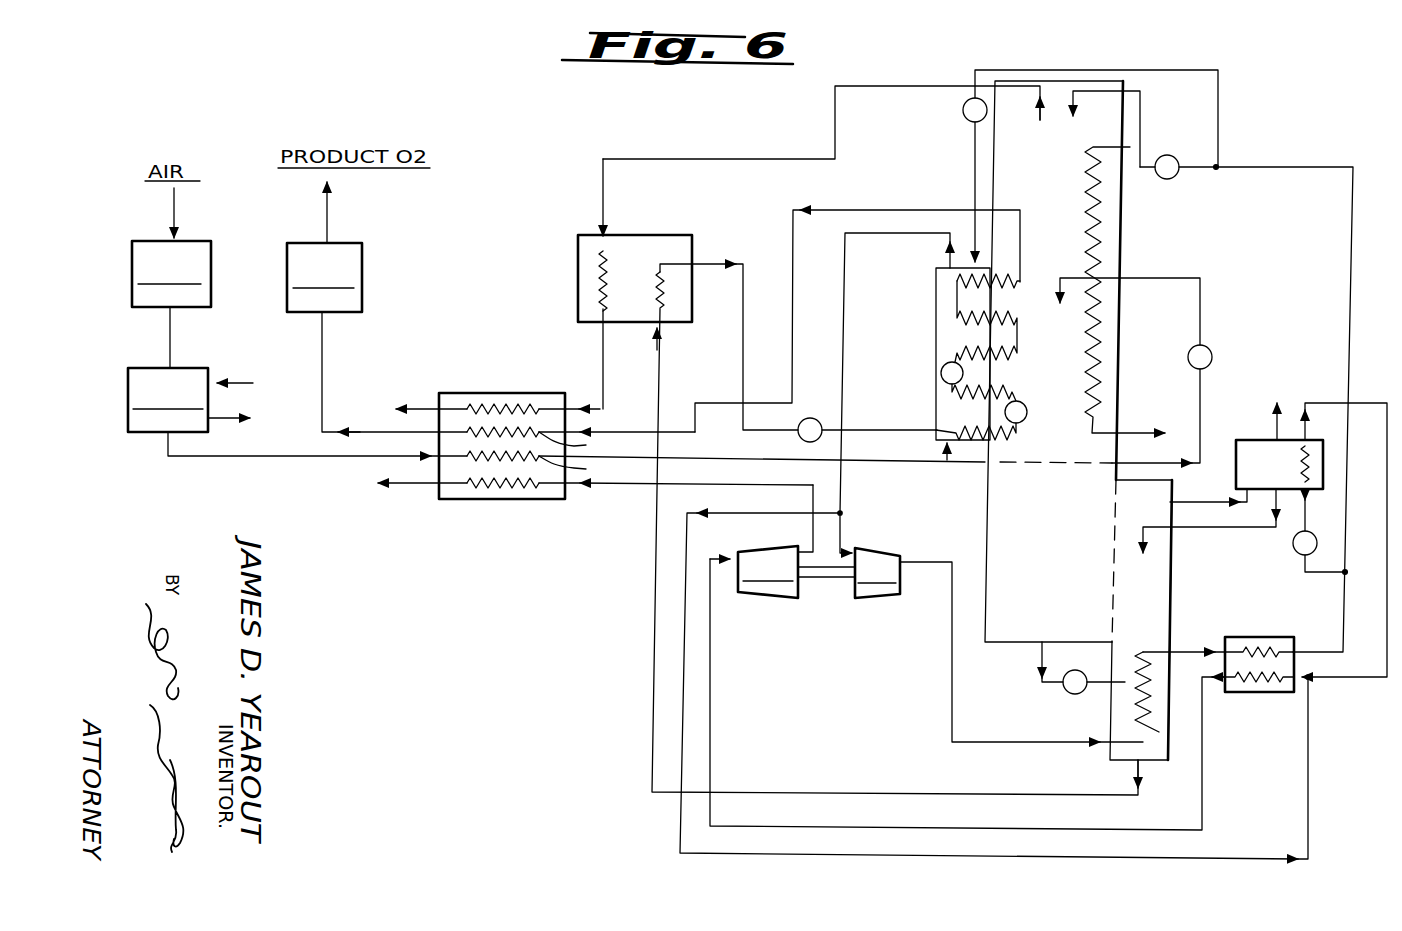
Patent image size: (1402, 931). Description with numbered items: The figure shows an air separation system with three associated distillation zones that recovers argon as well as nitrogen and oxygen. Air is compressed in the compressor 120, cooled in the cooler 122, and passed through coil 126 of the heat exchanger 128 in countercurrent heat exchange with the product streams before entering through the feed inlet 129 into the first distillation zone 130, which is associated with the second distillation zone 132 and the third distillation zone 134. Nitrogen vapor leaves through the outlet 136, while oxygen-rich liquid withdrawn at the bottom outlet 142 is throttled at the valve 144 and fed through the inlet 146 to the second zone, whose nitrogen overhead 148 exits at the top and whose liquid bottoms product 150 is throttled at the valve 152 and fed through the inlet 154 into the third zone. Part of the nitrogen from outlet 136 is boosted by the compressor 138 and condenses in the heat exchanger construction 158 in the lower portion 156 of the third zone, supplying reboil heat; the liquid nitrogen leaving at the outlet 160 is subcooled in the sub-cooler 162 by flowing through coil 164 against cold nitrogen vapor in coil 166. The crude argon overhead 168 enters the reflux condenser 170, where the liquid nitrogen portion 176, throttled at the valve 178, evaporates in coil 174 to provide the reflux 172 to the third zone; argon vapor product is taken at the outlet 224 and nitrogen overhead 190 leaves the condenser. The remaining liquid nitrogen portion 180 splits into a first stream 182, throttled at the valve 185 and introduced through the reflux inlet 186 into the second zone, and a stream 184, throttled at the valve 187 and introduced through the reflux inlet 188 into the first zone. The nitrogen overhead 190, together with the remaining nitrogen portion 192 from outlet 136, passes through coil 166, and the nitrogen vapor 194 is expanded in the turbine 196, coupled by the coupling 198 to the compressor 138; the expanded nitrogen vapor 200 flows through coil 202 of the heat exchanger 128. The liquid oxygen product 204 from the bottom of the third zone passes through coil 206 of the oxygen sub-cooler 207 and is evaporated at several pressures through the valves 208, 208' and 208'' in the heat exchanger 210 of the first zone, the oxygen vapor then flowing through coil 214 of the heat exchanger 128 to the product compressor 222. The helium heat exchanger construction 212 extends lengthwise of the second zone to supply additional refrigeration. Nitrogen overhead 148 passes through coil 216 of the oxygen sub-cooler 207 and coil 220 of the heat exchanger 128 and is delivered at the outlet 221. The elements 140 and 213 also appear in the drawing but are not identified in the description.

The compressor 120 is at (222, 230).
The cooler 122 is at (204, 370).
The coil 126 is at (586, 470).
The heat exchanger 128 is at (500, 404).
The air feed inlet 129 is at (962, 470).
The first distillation zone 130 is at (973, 400).
The second distillation zone 132 is at (985, 550).
The third distillation zone 134 is at (1183, 620).
The nitrogen vapor outlet 136 is at (904, 235).
The compressor 138 is at (880, 598).
The line 140 is at (1010, 742).
The oxygen-rich liquid outlet 142 is at (944, 462).
The throttle valve 144 is at (1212, 352).
The feed inlet 146 is at (1085, 361).
The nitrogen overhead 148 is at (810, 162).
The liquid bottoms product 150 is at (1036, 668).
The throttle valve 152 is at (1064, 694).
The feed inlet 154 is at (1120, 680).
The lower portion 156 is at (1168, 745).
The heat exchanger construction 158 is at (1150, 710).
The liquid nitrogen outlet 160 is at (1254, 641).
The sub-cooler 162 is at (1224, 646).
The coil 164 is at (1256, 646).
The coil 166 is at (1278, 668).
The crude argon overhead 168 is at (1206, 508).
The reflux condenser 170 is at (1256, 440).
The reflux line 172 is at (1218, 528).
The coil 174 is at (1278, 427).
The liquid nitrogen portion 176 is at (1333, 576).
The throttle valve 178 is at (1293, 555).
The remaining liquid nitrogen portion 180 is at (1350, 352).
The first stream 182 is at (1198, 165).
The second stream 184 is at (1074, 55).
The throttle valve 185 is at (1168, 155).
The reflux inlet 186 is at (1100, 91).
The throttle valve 187 is at (963, 109).
The reflux inlet 188 is at (973, 196).
The nitrogen overhead 190 is at (1384, 400).
The remaining nitrogen overhead portion 192 is at (1001, 857).
The nitrogen vapor 194 is at (1133, 830).
The turbine 196 is at (776, 598).
The coupling 198 is at (836, 580).
The expanded nitrogen vapor 200 is at (628, 486).
The coil 202 is at (536, 449).
The liquid oxygen product outlet 204 is at (1128, 780).
The coil 206 is at (663, 320).
The oxygen sub-cooler 207 is at (623, 282).
The throttle valve 208 is at (867, 415).
The throttle valve 208' is at (1053, 441).
The throttle valve 208'' is at (914, 357).
The heat exchanger 210 is at (988, 390).
The helium heat exchanger construction 212 is at (1108, 244).
The line 213 is at (793, 363).
The coil 214 is at (586, 446).
The coil 216 is at (578, 288).
The coil 220 is at (523, 412).
The nitrogen delivery outlet 221 is at (433, 373).
The compressor 222 is at (360, 252).
The argon vapor product outlet 224 is at (1283, 412).